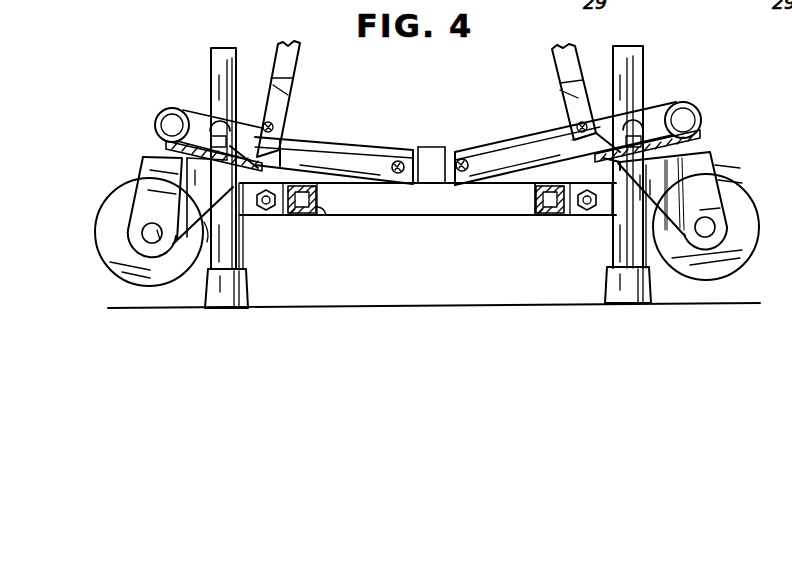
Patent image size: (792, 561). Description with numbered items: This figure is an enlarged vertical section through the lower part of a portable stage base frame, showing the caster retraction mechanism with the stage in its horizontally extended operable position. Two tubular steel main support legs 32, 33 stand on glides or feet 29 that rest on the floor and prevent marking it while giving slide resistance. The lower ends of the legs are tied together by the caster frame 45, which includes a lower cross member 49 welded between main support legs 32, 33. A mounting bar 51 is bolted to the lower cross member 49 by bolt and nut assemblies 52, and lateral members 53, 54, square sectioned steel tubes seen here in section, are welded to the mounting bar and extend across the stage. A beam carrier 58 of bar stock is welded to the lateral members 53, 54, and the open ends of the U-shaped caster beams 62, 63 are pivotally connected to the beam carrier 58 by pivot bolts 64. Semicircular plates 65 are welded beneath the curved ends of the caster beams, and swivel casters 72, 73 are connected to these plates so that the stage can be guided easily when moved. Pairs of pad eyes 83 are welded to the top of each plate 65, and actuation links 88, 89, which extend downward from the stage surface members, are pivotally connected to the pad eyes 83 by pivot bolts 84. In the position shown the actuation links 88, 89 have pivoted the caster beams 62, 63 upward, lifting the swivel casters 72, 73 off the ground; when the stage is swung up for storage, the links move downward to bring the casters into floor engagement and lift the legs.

The glides or feet 29 is at (246, 296).
The main support leg 32 is at (209, 52).
The main support leg 33 is at (646, 52).
The caster frame 45 is at (523, 216).
The lower cross member 49 is at (243, 217).
The mounting bar 51 is at (408, 213).
The bolt and nut assemblies 52 is at (273, 209).
The lateral member 53 is at (330, 212).
The lateral member 54 is at (552, 213).
The beam carrier 58 is at (432, 150).
The caster beam 62 is at (164, 110).
The caster beam 63 is at (694, 108).
The pivot bolts 64 is at (460, 162).
The semicircular plates 65 is at (183, 150).
The swivel caster 72 is at (128, 188).
The swivel caster 73 is at (736, 190).
The pad eyes 83 is at (278, 144).
The pivot bolt 84 is at (284, 121).
The actuation link 88 is at (285, 77).
The actuation link 89 is at (556, 75).